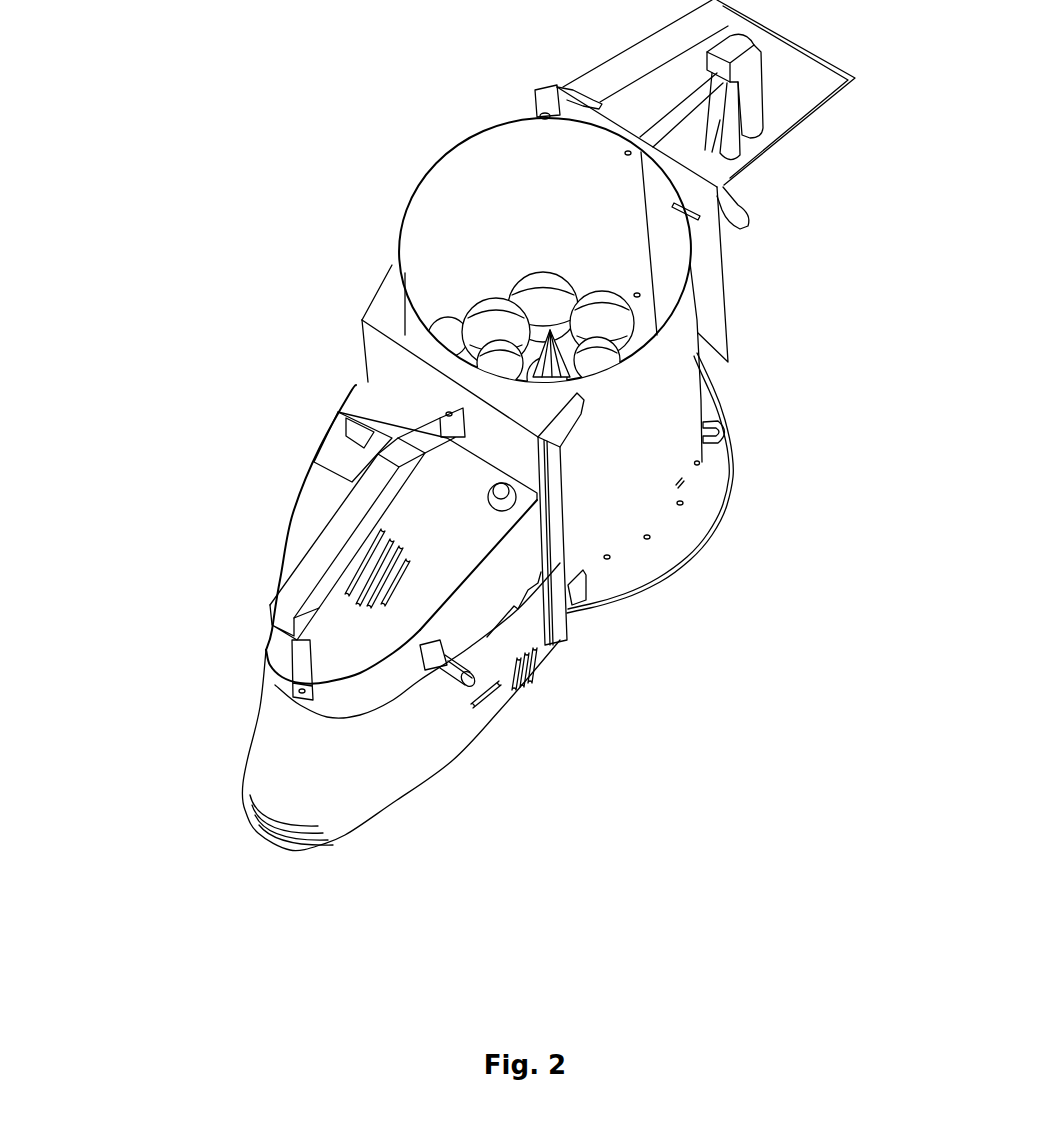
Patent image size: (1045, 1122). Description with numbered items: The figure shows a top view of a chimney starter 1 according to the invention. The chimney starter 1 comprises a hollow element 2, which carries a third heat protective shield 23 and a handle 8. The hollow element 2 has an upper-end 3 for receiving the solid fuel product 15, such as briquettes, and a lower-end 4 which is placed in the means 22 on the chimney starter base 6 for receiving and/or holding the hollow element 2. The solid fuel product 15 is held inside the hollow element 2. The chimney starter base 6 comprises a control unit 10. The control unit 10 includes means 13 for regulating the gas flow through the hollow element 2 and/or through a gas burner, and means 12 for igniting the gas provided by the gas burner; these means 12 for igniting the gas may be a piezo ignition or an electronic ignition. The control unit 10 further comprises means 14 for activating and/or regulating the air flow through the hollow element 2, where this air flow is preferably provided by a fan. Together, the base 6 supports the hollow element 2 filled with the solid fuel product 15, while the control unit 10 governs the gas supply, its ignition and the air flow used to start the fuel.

The chimney starter 1 is at (360, 54).
The hollow element 2 is at (658, 381).
The upper-end 3 is at (408, 197).
The lower-end 4 is at (676, 474).
The chimney starter base 6 is at (700, 511).
The handle 8 is at (749, 89).
The control unit 10 is at (249, 720).
The means for igniting the gas 12 is at (494, 494).
The means for regulating the gas flow 13 is at (424, 680).
The means for activating and/or regulating the air flow 14 is at (340, 422).
The solid fuel product 15 is at (475, 320).
The means for receiving and/or holding the hollow element 22 is at (578, 575).
The third heat protective shield 23 is at (709, 290).